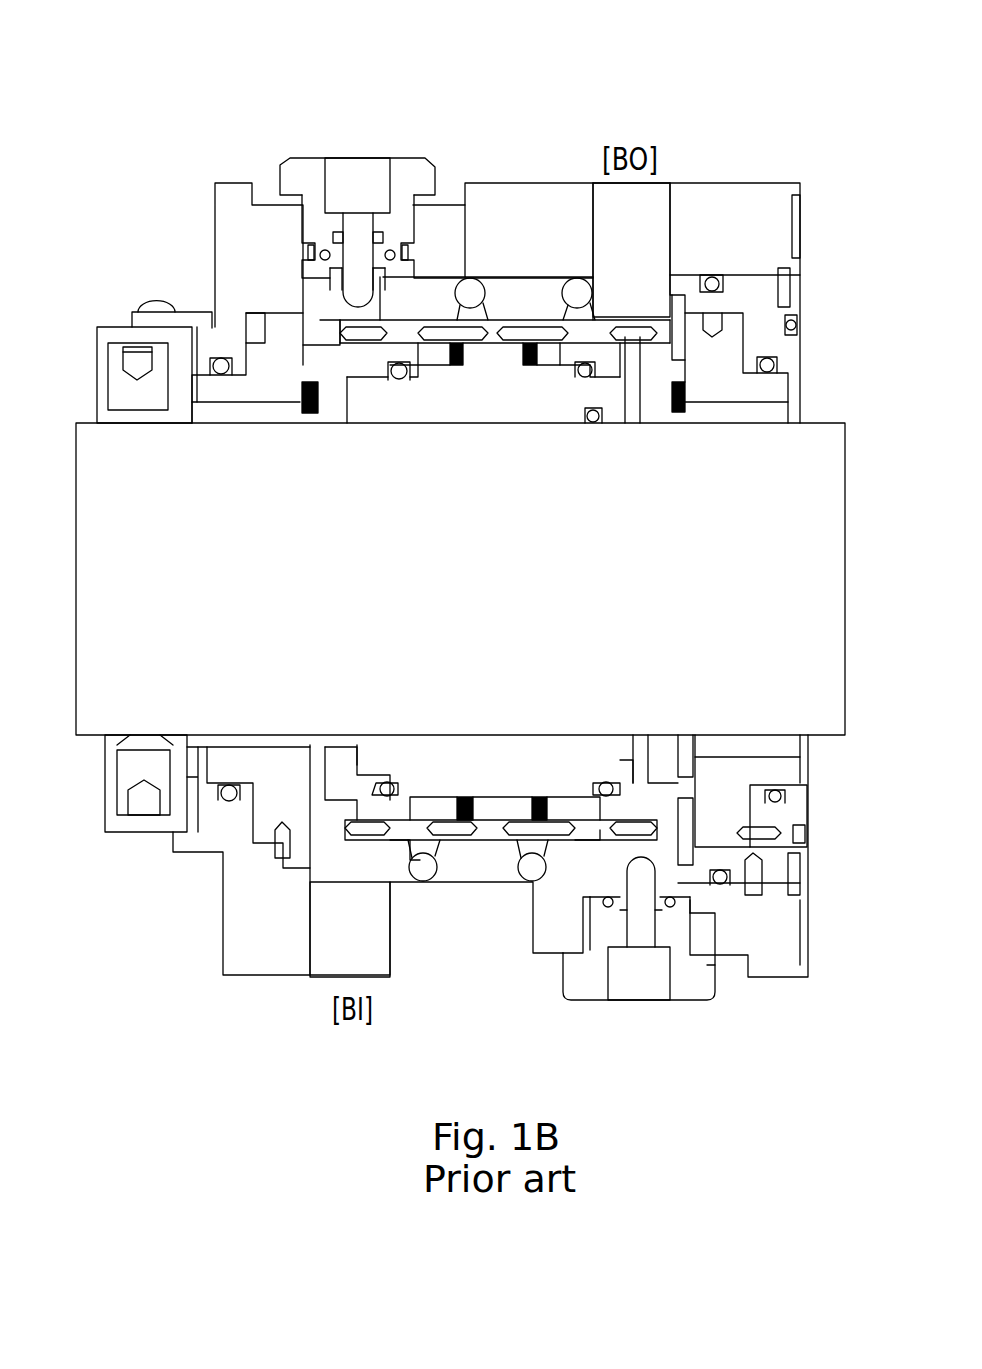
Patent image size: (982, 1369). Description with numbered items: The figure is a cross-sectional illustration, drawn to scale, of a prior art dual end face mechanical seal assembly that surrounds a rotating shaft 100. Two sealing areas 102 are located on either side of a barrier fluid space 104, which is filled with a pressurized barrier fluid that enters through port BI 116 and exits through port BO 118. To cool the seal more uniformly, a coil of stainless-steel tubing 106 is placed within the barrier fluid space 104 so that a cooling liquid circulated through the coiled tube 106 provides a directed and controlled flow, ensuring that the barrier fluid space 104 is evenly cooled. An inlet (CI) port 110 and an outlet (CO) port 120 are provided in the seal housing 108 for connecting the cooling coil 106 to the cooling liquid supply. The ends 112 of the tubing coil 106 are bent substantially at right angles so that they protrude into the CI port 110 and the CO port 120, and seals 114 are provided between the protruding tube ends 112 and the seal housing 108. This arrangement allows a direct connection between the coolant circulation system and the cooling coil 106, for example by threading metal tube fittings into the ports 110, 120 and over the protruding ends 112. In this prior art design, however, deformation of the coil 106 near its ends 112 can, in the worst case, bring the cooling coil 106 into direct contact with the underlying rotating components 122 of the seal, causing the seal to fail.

The rotating shaft 100 is at (216, 586).
The sealing areas 102 is at (310, 388).
The barrier fluid space 104 is at (543, 311).
The coiled tube 106 is at (470, 293).
The seal housing 108 is at (557, 245).
The inlet port 110 is at (315, 158).
The ends of the tubing coil 112 is at (355, 257).
The seals 114 is at (393, 247).
The port BI 116 is at (371, 947).
The port BO 118 is at (652, 245).
The outlet port 120 is at (690, 1000).
The rotating components 122 is at (405, 335).